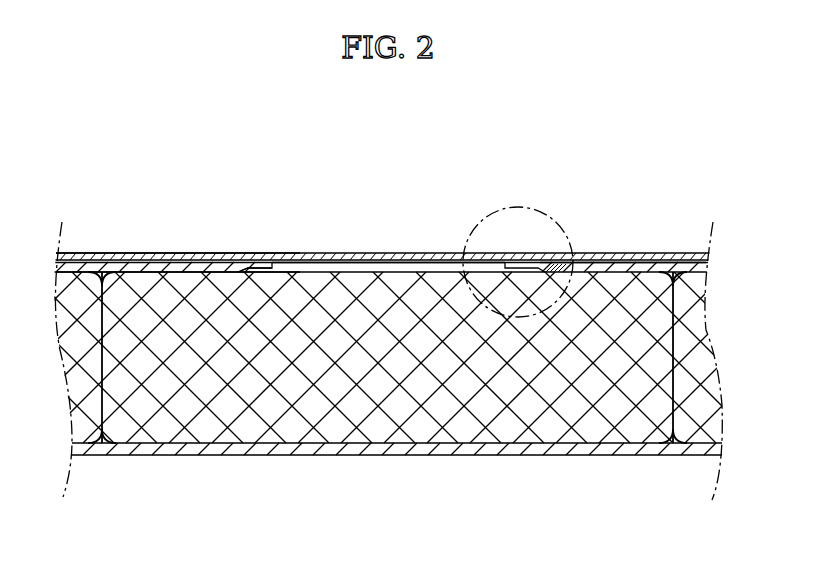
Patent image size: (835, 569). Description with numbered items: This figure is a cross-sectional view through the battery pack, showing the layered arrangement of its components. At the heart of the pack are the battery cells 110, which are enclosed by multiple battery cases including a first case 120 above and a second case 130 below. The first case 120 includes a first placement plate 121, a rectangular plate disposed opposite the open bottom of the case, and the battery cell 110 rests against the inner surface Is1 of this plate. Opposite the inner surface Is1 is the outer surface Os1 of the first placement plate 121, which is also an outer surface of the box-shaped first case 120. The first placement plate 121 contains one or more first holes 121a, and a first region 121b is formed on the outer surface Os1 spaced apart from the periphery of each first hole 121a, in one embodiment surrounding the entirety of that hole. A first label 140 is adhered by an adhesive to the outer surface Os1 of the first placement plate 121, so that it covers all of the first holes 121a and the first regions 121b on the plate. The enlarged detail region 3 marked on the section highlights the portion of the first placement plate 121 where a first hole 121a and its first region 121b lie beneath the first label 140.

The battery cell 110 is at (86, 415).
The first case 120 is at (627, 256).
The first placement plate 121 is at (685, 266).
The first hole 121a is at (327, 262).
The first region 121b is at (215, 258).
The second case 130 is at (627, 462).
The first label 140 is at (114, 250).
The outer surface Os1 is at (162, 252).
The inner surface Is1 is at (130, 282).
The enlarged detail region (FIG. 3) 3 is at (543, 208).